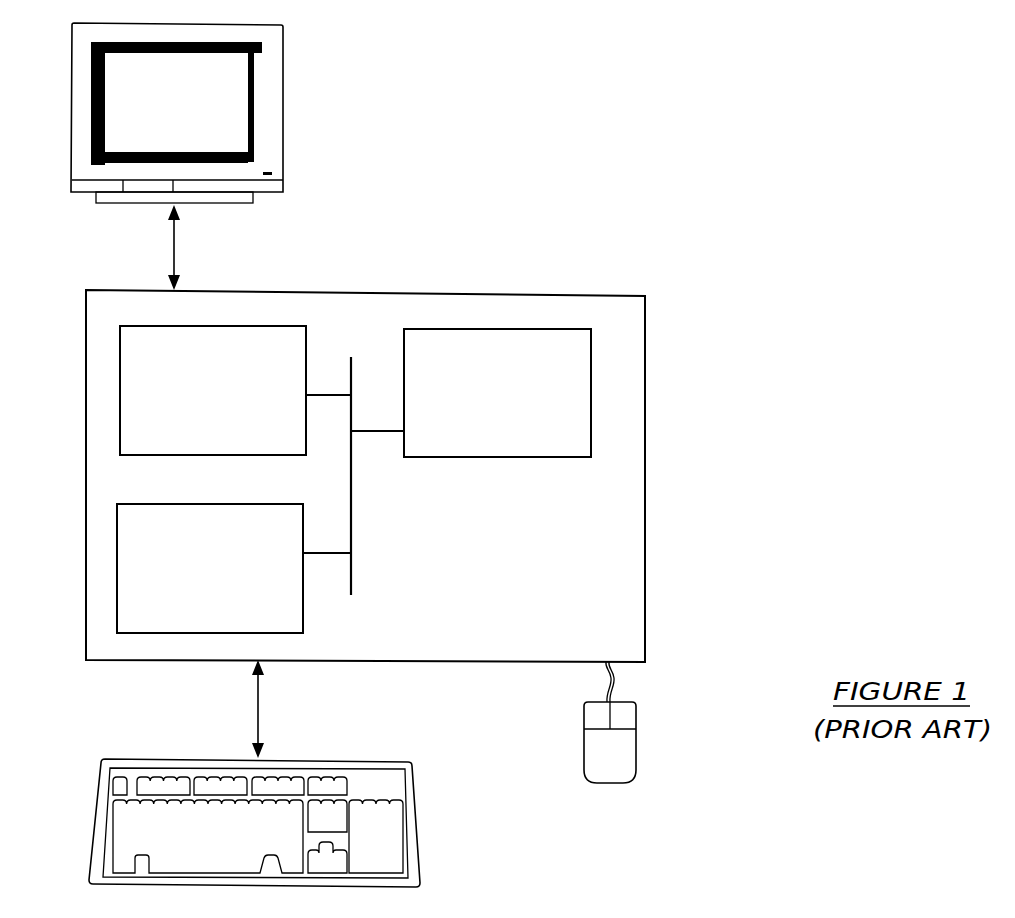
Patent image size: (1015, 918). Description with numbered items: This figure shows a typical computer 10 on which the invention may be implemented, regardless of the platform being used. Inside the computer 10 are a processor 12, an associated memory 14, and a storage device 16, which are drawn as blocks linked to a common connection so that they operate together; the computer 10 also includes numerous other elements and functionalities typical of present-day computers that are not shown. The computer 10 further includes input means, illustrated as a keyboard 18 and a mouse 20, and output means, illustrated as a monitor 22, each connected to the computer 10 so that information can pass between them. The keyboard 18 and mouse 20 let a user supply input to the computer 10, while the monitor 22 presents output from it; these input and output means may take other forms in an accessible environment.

The computer 10 is at (645, 557).
The processor 12 is at (500, 404).
The memory 14 is at (200, 403).
The storage device 16 is at (195, 580).
The keyboard 18 is at (177, 845).
The mouse 20 is at (597, 765).
The monitor 22 is at (165, 124).